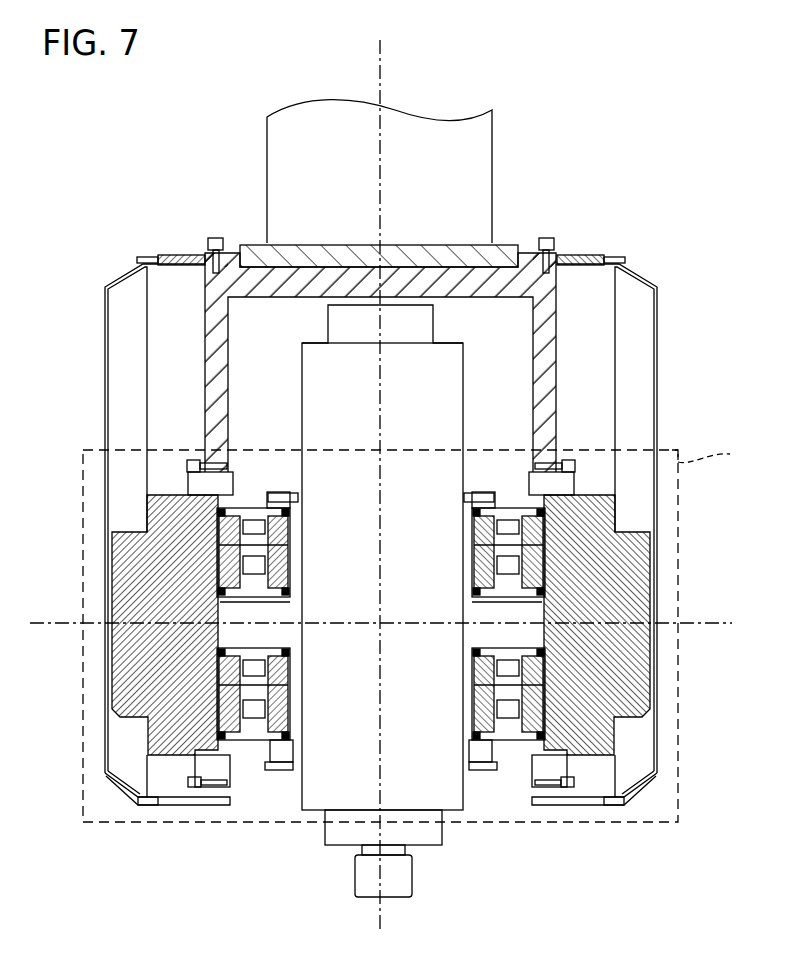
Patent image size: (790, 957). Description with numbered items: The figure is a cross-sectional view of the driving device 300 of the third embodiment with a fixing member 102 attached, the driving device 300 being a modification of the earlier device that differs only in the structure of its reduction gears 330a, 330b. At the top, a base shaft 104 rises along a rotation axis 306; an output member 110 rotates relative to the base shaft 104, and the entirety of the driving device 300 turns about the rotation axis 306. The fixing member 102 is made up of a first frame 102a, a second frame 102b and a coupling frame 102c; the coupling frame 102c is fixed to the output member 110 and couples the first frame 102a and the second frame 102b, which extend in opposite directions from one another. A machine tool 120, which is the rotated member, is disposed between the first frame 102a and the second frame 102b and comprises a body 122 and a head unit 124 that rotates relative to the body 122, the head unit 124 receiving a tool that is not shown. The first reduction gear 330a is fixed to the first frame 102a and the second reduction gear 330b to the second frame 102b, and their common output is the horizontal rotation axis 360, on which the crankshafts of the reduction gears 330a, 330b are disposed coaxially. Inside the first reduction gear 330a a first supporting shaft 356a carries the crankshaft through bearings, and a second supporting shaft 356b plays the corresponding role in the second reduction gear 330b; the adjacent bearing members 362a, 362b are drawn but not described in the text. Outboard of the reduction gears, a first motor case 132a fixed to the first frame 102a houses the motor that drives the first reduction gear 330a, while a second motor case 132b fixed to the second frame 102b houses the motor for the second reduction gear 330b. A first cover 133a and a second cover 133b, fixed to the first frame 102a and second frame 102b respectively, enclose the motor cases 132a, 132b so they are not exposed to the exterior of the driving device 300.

The driving device 300 is at (628, 222).
The rotation axis 306 is at (380, 60).
The rotation axis 360 is at (703, 625).
The base shaft 104 is at (480, 165).
The fixing member 102 is at (384, 329).
The first frame 102a is at (547, 387).
The second frame 102b is at (213, 385).
The coupling frame 102c is at (508, 275).
The output member 110 is at (255, 254).
The machine tool 120 is at (487, 366).
The body 122 is at (452, 377).
The head unit 124 is at (398, 883).
The first cover 133a is at (658, 425).
The second cover 133b is at (105, 433).
The first motor case 132a is at (640, 698).
The second motor case 132b is at (122, 695).
The first supporting shaft 356a is at (546, 494).
The second supporting shaft 356b is at (214, 494).
The right bearing cap 362a is at (493, 517).
The left bearing cap 362b is at (247, 508).
The first reduction gear 330a is at (508, 794).
The second reduction gear 330b is at (270, 794).